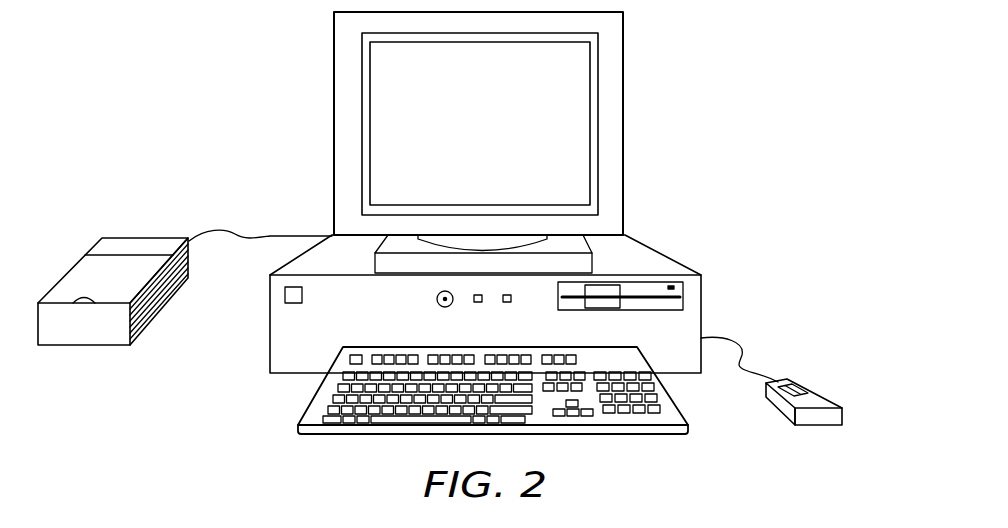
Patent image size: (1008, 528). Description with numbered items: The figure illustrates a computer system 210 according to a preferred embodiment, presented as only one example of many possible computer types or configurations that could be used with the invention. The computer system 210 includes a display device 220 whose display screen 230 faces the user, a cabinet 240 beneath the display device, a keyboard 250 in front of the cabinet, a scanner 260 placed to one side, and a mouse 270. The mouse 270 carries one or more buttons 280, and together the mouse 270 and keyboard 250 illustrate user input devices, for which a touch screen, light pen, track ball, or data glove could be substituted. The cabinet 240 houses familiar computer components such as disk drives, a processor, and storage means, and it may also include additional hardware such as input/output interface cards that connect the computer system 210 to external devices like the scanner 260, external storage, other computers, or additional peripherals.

The computer system 210 is at (775, 115).
The display device 220 is at (625, 124).
The display screen 230 is at (580, 70).
The cabinet 240 is at (643, 257).
The keyboard 250 is at (590, 432).
The scanner 260 is at (95, 345).
The mouse 270 is at (822, 420).
The buttons 280 is at (804, 386).